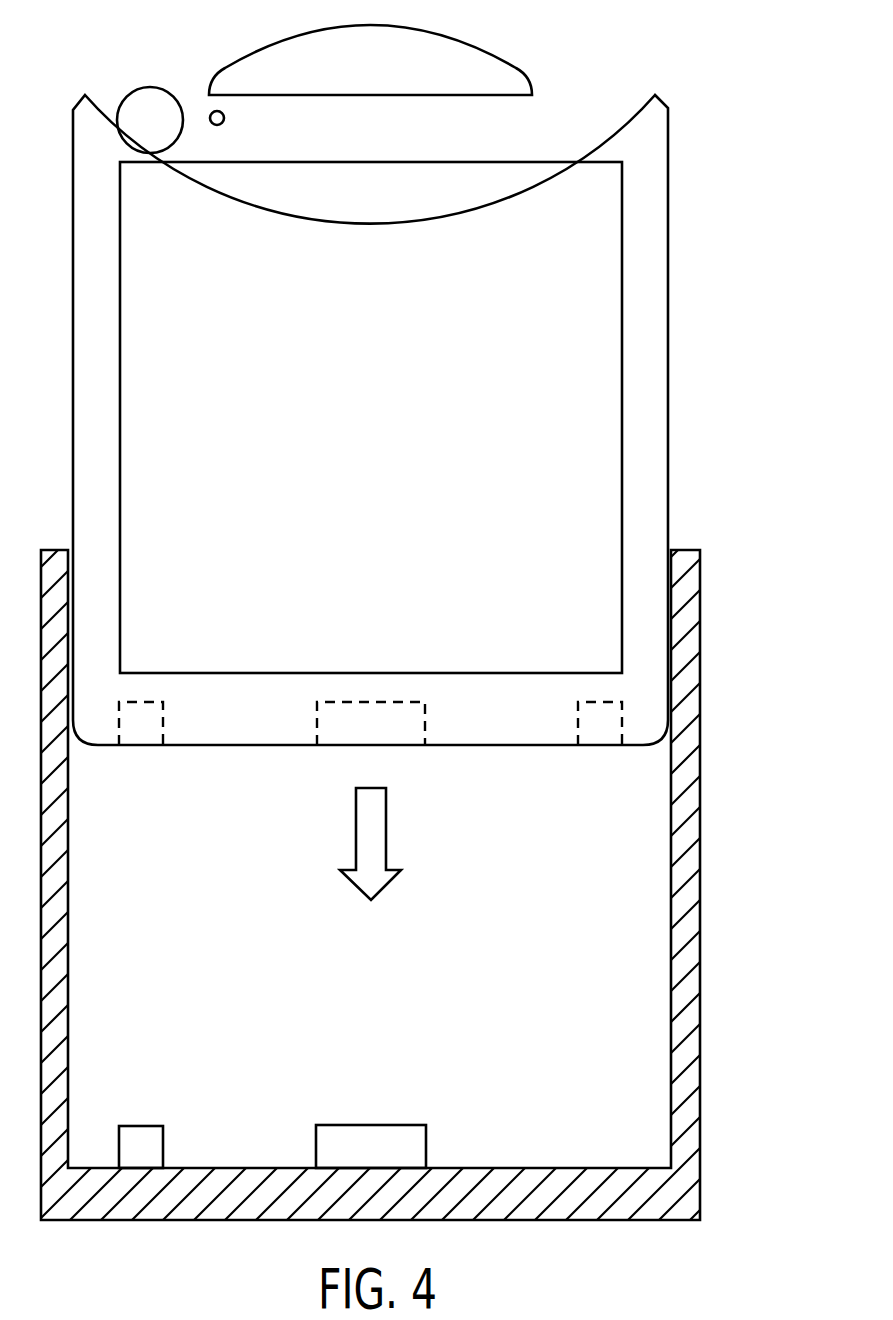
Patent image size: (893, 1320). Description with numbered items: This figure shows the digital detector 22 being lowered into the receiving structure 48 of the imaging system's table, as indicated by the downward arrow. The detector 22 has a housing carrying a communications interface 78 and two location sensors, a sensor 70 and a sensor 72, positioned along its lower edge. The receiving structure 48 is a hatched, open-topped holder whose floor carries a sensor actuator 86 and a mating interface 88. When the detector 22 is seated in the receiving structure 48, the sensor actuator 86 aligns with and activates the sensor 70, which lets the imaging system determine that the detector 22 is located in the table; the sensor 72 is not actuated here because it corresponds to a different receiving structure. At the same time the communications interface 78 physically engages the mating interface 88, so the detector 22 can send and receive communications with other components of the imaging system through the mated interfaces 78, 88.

The digital detector 22 is at (652, 455).
The receiving structure 48 is at (690, 990).
The sensor 70 is at (164, 722).
The sensor 72 is at (578, 722).
The communications interface 78 is at (426, 722).
The sensor actuator 86 is at (142, 1125).
The mating interface 88 is at (373, 1125).